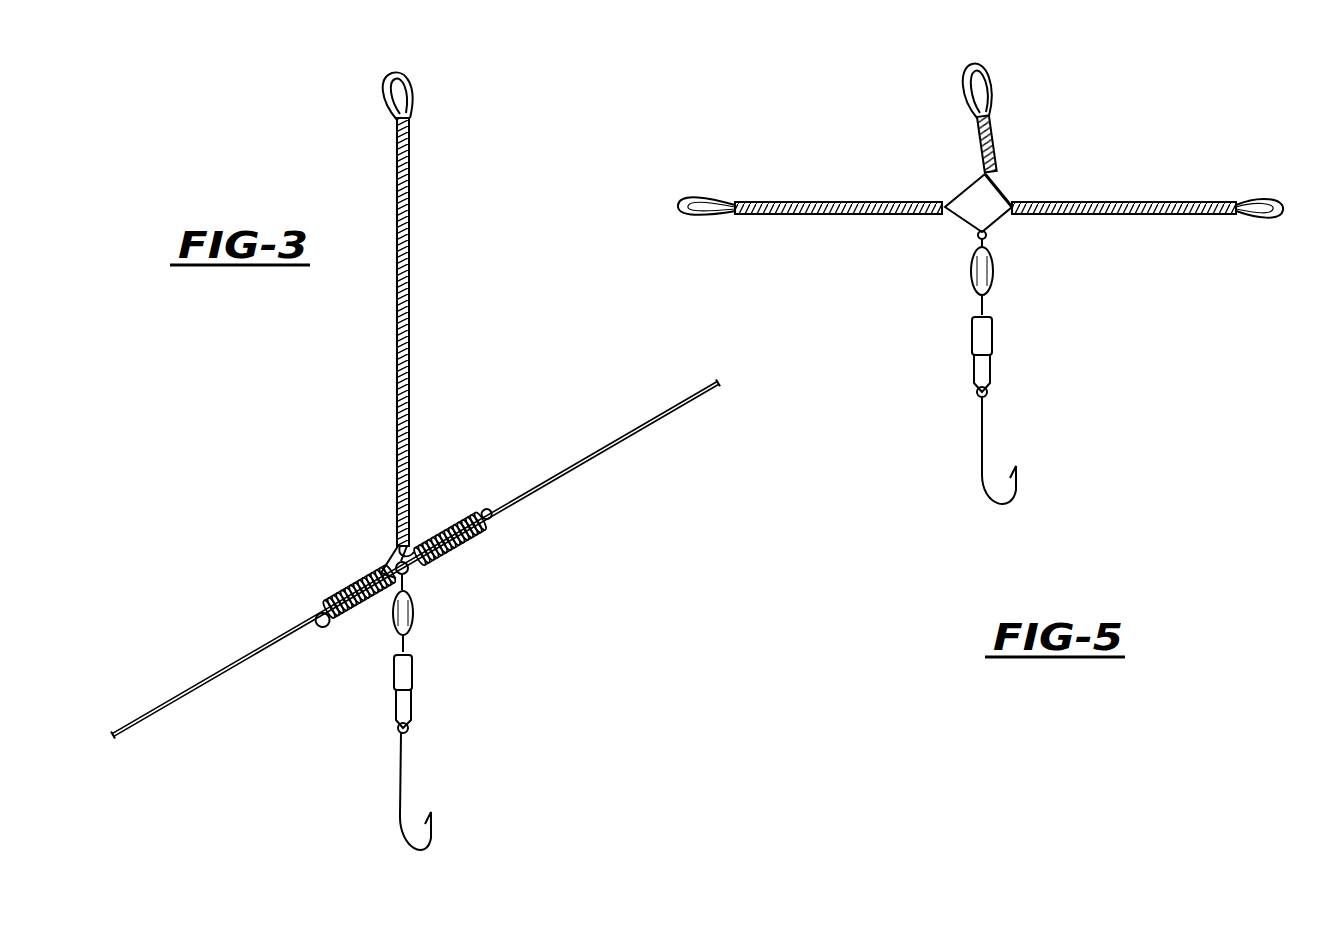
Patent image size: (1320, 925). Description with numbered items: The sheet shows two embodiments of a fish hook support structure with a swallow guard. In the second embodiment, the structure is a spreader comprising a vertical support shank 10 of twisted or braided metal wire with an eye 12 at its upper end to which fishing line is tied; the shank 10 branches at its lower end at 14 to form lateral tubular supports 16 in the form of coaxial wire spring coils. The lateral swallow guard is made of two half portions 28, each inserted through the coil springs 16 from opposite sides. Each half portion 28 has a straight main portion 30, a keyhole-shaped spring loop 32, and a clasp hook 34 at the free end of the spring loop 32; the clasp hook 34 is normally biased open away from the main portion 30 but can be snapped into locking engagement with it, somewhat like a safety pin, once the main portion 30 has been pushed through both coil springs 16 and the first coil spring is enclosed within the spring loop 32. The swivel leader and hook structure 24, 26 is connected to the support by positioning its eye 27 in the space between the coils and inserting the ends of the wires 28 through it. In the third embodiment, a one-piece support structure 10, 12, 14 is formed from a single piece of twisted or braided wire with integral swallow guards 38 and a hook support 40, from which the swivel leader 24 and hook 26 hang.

In FIG. 3, the vertical support shank 10 is at (410, 324).
In FIG. 5, the vertical support shank 10 is at (1000, 126).
In FIG. 3, the eye 12 is at (417, 96).
In FIG. 5, the eye 12 is at (1002, 62).
In FIG. 3, the branch 14 is at (388, 567).
In FIG. 5, the branch 14 is at (1013, 195).
In FIG. 3, the lateral tubular supports 16 is at (348, 592).
In FIG. 3, the swivel leader 24 is at (413, 606).
In FIG. 5, the swivel leader 24 is at (972, 268).
In FIG. 3, the hook 26 is at (404, 777).
In FIG. 5, the hook 26 is at (986, 447).
In FIG. 3, the eye 27 is at (420, 570).
In FIG. 3, the half portion 28 is at (577, 454).
In FIG. 3, the straight main portion 30 is at (590, 464).
In FIG. 3, the spring loop 32 is at (482, 518).
In FIG. 3, the clasp hook 34 is at (410, 542).
In FIG. 5, the swallow guards 38 is at (1145, 204).
In FIG. 5, the hook support 40 is at (988, 232).